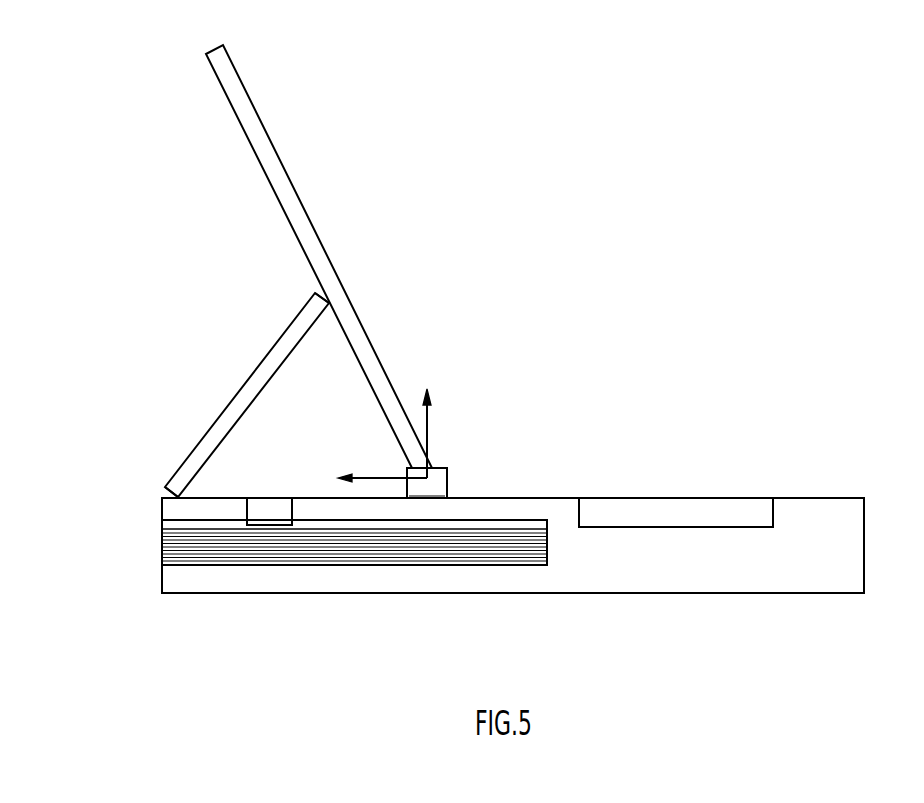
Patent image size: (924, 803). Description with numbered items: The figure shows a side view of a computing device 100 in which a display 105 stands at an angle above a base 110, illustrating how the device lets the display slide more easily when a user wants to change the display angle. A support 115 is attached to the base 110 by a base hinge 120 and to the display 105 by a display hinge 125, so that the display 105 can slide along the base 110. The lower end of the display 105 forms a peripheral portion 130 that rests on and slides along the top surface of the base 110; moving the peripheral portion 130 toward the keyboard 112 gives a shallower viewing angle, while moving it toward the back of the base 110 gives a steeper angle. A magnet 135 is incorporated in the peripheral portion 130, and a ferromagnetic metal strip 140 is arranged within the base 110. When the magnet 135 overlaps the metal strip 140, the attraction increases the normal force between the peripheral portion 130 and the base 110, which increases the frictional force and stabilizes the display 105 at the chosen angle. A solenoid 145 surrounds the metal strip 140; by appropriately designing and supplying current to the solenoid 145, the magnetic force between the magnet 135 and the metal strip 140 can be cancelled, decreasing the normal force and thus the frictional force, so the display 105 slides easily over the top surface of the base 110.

The computing device 100 is at (653, 235).
The display 105 is at (287, 165).
The base 110 is at (542, 508).
The keyboard 112 is at (690, 508).
The support 115 is at (206, 432).
The base hinge 120 is at (163, 493).
The display hinge 125 is at (316, 292).
The peripheral portion 130 is at (433, 467).
The magnet 135 is at (437, 483).
The metal strip 140 is at (353, 566).
The solenoid 145 is at (488, 552).